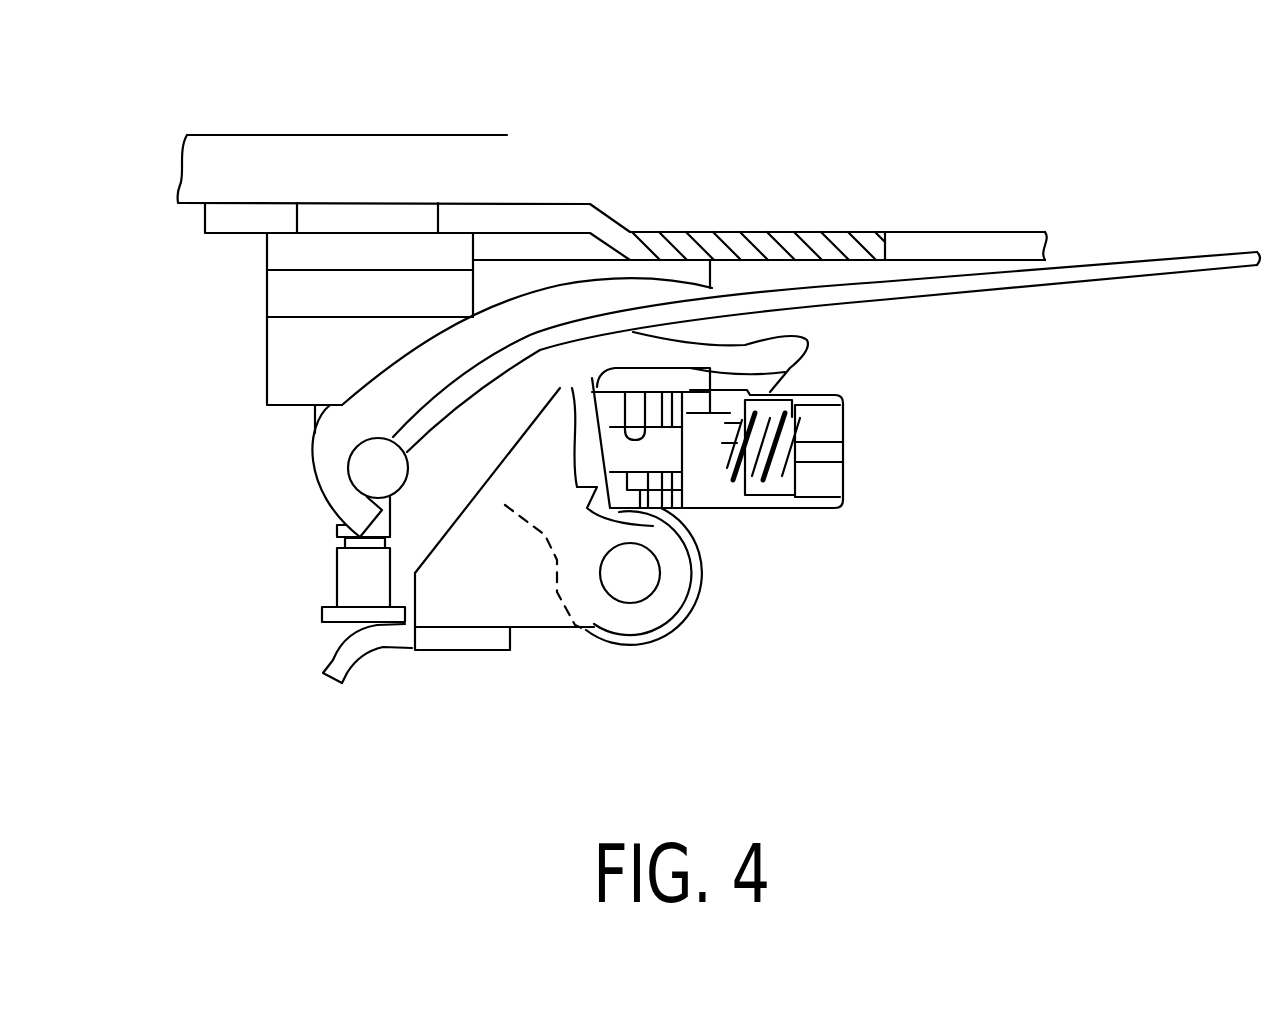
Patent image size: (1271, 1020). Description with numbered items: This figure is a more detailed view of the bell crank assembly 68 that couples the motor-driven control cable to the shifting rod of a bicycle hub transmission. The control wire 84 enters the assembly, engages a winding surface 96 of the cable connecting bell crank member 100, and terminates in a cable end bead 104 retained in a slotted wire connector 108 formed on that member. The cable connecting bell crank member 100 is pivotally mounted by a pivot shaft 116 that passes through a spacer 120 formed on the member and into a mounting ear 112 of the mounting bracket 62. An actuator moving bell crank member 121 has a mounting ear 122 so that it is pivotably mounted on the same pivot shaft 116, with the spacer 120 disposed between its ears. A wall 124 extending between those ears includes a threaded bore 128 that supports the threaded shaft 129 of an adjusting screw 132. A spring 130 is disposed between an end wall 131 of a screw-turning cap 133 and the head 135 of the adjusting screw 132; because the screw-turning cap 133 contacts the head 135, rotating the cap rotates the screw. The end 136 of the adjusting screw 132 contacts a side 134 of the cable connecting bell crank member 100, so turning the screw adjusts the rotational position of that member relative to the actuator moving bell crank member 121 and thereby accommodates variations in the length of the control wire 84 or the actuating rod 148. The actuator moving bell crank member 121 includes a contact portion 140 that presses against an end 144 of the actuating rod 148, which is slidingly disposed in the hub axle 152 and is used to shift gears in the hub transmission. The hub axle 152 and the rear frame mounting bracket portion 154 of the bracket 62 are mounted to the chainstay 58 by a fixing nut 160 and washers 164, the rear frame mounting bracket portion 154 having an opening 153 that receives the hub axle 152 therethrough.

The chainstay 58 is at (327, 150).
The mounting bracket 62 is at (900, 232).
The bell crank assembly 68 is at (657, 692).
The control wire 84 is at (1195, 270).
The winding surface 96 is at (807, 331).
The cable connecting bell crank member 100 is at (477, 450).
The cable end bead 104 is at (357, 457).
The slotted wire connector 108 is at (323, 490).
The mounting ear 112 is at (693, 528).
The pivot shaft 116 is at (657, 612).
The spacer 120 is at (617, 650).
The actuator moving bell crank member 121 is at (467, 610).
The mounting ear 122 is at (647, 582).
The wall 124 is at (640, 490).
The threaded bore 128 is at (625, 405).
The threaded shaft 129 is at (735, 442).
The spring 130 is at (780, 364).
The end wall 131 is at (663, 403).
The adjusting screw 132 is at (848, 469).
The screw-turning cap 133 is at (848, 428).
The side 134 is at (547, 413).
The head 135 is at (843, 442).
The end 136 is at (597, 400).
The contact portion 140 is at (321, 684).
The end 144 is at (328, 625).
The actuating rod 148 is at (343, 563).
The hub axle 152 is at (320, 413).
The opening 153 is at (433, 220).
The rear frame mounting bracket portion 154 is at (237, 217).
The fixing nut 160 is at (278, 340).
The washers 164 is at (273, 302).